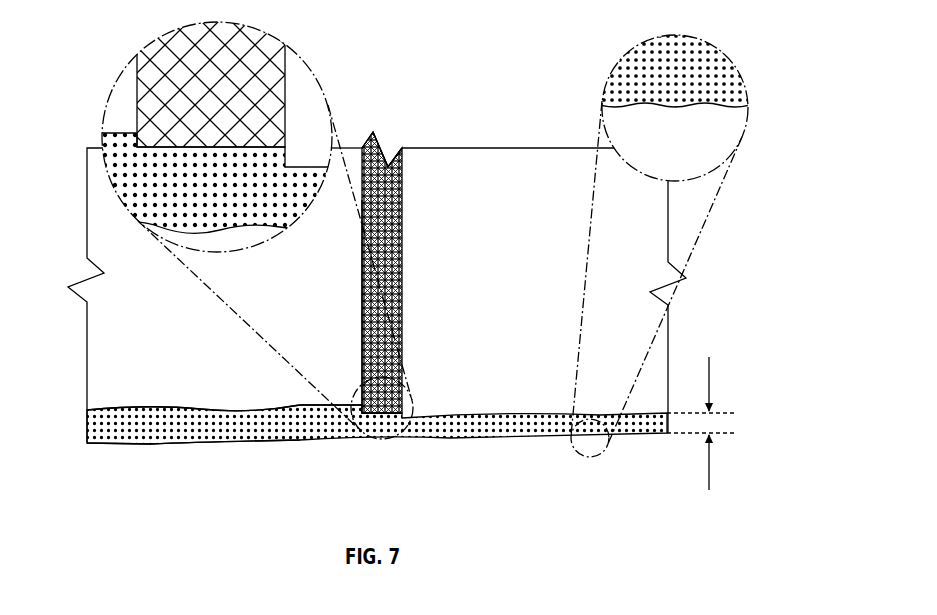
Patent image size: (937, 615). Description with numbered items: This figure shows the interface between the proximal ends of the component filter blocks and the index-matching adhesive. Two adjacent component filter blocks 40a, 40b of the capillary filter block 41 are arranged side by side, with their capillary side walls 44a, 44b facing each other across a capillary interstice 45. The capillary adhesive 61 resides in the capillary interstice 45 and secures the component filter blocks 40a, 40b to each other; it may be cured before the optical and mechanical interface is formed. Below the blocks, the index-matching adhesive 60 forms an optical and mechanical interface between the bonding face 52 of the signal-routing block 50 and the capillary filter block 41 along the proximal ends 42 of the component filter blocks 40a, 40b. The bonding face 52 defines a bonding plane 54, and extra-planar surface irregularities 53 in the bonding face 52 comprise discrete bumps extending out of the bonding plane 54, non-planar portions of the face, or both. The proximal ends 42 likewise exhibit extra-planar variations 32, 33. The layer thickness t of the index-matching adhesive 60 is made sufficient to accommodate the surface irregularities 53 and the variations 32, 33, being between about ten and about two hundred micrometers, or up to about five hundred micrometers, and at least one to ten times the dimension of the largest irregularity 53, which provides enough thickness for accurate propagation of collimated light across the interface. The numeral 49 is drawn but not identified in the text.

The extra-planar variation 32 is at (325, 410).
The extra-planar variation 33 is at (417, 405).
The component filter block 40a is at (500, 148).
The component filter block 40b is at (110, 235).
The capillary filter block 41 is at (63, 346).
The proximal ends 42 is at (213, 405).
The capillary side wall 44a is at (390, 254).
The capillary side wall 44b is at (360, 322).
The capillary interstice 45 is at (372, 116).
The outer surface 49 is at (54, 0).
The signal-routing block 50 is at (166, 493).
The bonding face 52 is at (150, 443).
The extra-planar surface irregularities 53 is at (590, 458).
The bonding plane 54 is at (274, 459).
The index-matching adhesive 60 is at (423, 427).
The capillary adhesive 61 is at (388, 167).
The layer thickness t is at (710, 373).